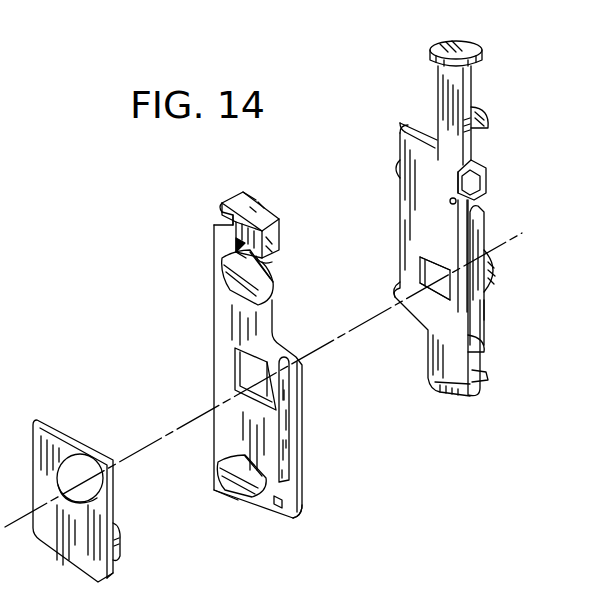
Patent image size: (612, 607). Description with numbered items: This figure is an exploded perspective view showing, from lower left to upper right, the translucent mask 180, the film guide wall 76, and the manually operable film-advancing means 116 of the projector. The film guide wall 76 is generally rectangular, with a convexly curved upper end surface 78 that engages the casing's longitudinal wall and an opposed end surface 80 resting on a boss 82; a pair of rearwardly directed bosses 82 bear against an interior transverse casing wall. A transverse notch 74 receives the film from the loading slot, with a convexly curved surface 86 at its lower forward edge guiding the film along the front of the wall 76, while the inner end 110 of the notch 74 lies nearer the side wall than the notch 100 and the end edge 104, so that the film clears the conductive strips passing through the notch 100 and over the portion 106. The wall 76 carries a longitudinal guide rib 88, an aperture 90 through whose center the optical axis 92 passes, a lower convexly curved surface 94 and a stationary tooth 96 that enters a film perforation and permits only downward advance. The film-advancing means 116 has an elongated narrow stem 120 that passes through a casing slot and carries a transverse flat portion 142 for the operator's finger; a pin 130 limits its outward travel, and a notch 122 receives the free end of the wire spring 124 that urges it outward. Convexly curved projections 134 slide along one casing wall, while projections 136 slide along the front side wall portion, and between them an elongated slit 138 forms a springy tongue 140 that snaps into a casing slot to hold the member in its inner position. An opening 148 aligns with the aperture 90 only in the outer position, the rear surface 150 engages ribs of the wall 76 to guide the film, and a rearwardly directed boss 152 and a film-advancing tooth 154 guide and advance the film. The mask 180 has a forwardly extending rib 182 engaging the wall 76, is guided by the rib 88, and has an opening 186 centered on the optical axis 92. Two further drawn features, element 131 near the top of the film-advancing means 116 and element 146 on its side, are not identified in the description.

The recess at base of head block 74 is at (272, 262).
The latch slide body 76 is at (217, 330).
The head block 78 is at (249, 203).
The lower end of slide body 80 is at (225, 497).
The guide lugs 82 is at (222, 277).
The rounded end of upper lug 86 is at (273, 275).
The guide rail 88 is at (283, 440).
The window aperture 90 is at (235, 372).
The assembly axis line 92 is at (358, 332).
The rounded corner of slide 94 is at (293, 510).
The catch tab 96 is at (278, 502).
The lip 100 is at (233, 223).
The top surface of head block 104 is at (236, 197).
The shoulder 106 is at (228, 218).
The notch 110 is at (235, 247).
The housing 116 is at (422, 215).
The plunger shaft 120 is at (450, 95).
The housing bottom foot 122 is at (443, 388).
The lower nub 124 is at (488, 377).
The side tab on shaft 130 is at (480, 118).
The diagonal brace 131 is at (412, 125).
The housing side wall 134 is at (398, 168).
The hooks 136 is at (487, 176).
The rod edge 138 is at (478, 313).
The spring rod 140 is at (483, 218).
The knob 142 is at (455, 41).
The side bump 146 is at (496, 273).
The housing window 148 is at (420, 267).
The window surface 150 is at (457, 249).
The hook arm 152 is at (457, 175).
The pivot pin 154 is at (451, 198).
The cover plate 180 is at (52, 426).
The plate lug 182 is at (118, 547).
The plate hole 186 is at (78, 459).